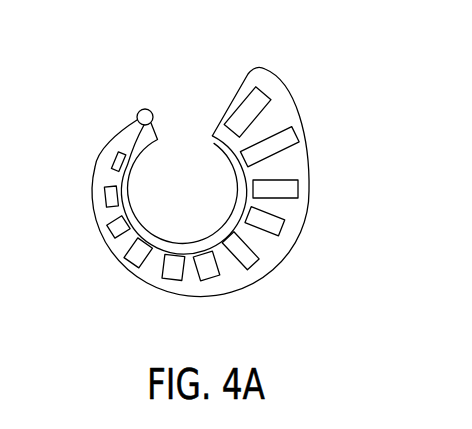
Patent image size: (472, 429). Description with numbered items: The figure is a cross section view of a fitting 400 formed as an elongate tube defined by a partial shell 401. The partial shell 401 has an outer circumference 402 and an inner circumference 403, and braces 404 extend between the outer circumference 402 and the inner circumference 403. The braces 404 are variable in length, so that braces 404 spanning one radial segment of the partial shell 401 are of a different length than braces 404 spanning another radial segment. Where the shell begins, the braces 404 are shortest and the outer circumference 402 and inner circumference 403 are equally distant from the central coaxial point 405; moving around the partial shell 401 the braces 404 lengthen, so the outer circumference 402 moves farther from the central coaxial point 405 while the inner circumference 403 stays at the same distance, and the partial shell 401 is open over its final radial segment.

The fitting 400 is at (217, 191).
The partial shell 401 is at (269, 131).
The outer circumference 402 is at (306, 153).
The inner circumference 403 is at (242, 222).
The brace 404 is at (248, 255).
The central coaxial point 405 is at (184, 187).